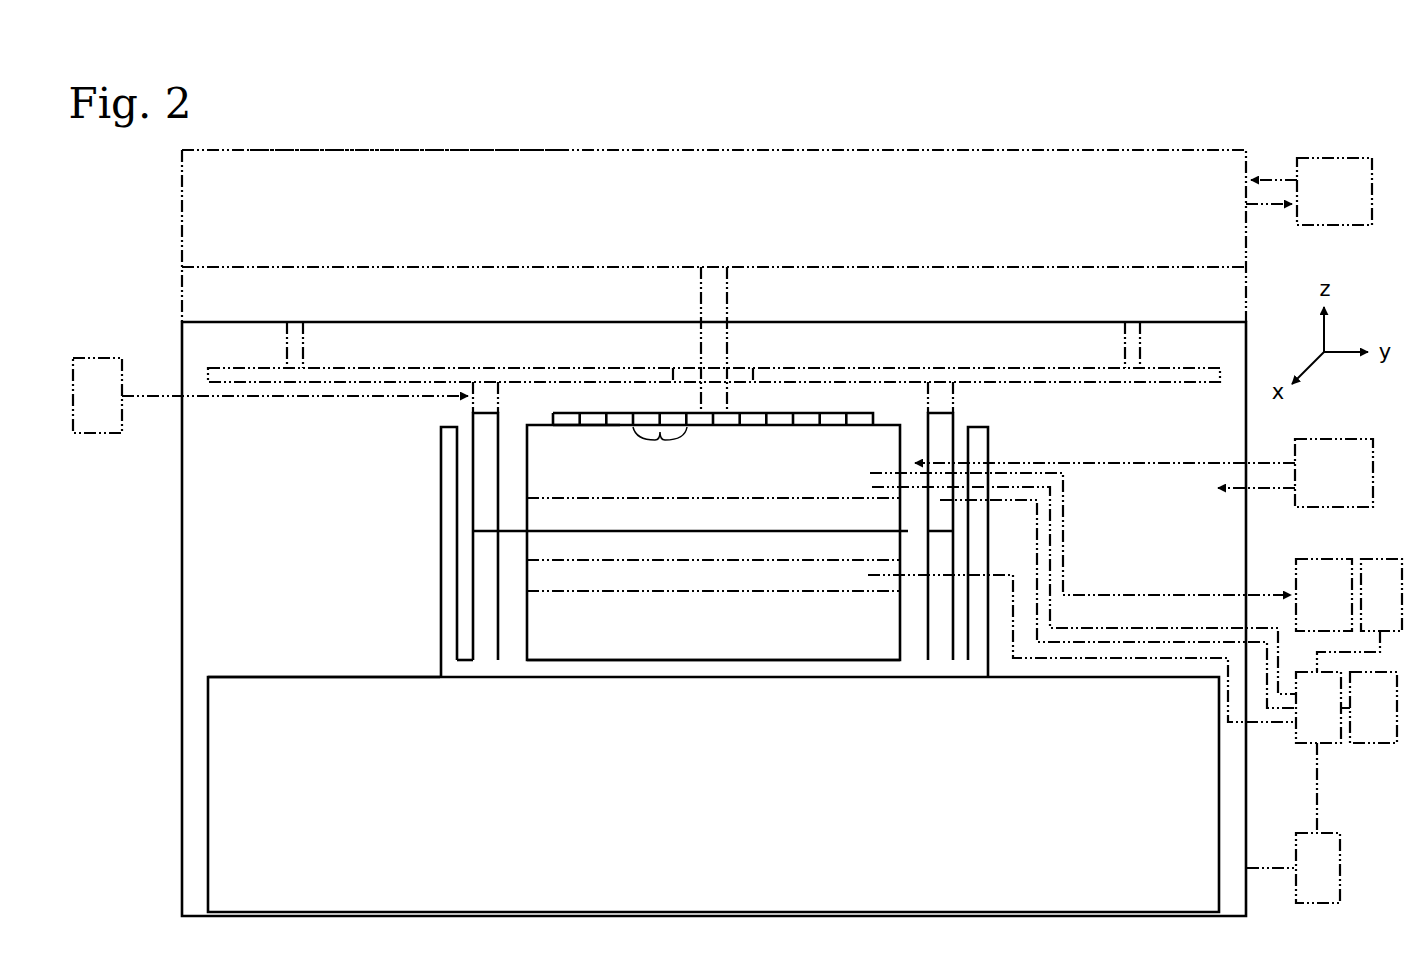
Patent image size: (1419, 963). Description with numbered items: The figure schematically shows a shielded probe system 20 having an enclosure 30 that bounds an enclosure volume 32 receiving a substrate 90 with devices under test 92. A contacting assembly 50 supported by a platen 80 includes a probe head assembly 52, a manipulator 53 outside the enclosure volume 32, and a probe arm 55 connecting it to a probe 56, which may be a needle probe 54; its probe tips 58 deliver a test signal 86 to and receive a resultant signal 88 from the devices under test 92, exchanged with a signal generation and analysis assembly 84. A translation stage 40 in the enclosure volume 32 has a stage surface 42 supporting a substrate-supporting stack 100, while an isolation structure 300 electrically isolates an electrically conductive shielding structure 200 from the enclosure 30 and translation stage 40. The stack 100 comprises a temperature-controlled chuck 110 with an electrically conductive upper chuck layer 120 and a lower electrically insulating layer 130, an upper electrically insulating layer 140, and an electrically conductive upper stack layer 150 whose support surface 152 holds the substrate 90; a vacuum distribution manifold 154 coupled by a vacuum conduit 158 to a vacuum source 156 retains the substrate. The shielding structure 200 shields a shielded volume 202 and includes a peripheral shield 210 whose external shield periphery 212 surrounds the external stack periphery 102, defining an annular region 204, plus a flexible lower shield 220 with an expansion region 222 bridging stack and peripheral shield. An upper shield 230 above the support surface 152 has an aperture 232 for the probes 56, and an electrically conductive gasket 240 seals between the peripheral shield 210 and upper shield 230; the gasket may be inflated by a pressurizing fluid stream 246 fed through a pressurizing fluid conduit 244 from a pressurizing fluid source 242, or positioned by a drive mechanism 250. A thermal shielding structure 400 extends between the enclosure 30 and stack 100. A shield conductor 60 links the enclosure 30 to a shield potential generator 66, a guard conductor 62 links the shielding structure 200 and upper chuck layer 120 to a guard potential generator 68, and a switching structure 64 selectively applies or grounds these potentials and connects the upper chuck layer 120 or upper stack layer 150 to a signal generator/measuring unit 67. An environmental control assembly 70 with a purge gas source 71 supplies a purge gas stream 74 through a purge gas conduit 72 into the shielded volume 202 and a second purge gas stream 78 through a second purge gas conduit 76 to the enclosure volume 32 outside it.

The shielded probe system 20 is at (138, 190).
The enclosure 30 is at (180, 656).
The enclosure volume 32 is at (205, 616).
The translation stage 40 is at (713, 794).
The stage surface 42 is at (283, 676).
The contacting assembly 50 is at (218, 148).
The probe head assembly 52 is at (300, 152).
The manipulator 53 is at (370, 162).
The needle probe 54 is at (445, 162).
The probe arm 55 is at (520, 162).
The probe 56 is at (703, 297).
The probe tip 58 is at (700, 413).
The shield conductor 60 is at (1285, 864).
The guard conductor 62 is at (1035, 565).
The switching structure 64 is at (1318, 752).
The shield potential generator 66 is at (1318, 868).
The signal generator/measuring unit 67 is at (1359, 615).
The guard potential generator 68 is at (1369, 707).
The environmental control assembly 70 is at (1330, 512).
The purge gas source 71 is at (1334, 473).
The purge gas conduit 72 is at (1133, 468).
The purge gas stream 74 is at (1103, 462).
The second purge gas conduit 76 is at (1262, 492).
The second purge gas stream 78 is at (1288, 492).
The platen 80 is at (180, 292).
The signal generation and analysis assembly 84 is at (1334, 191).
The test signal 86 is at (1265, 178).
The resultant signal 88 is at (1272, 206).
The substrate 90 is at (596, 432).
The device under test 92 is at (659, 450).
The substrate-supporting stack 100 is at (522, 518).
The external stack periphery 102 is at (490, 476).
The temperature-controlled chuck 110 is at (713, 637).
The electrically conductive upper chuck layer 120 is at (713, 577).
The lower electrically insulating layer 130 is at (713, 547).
The upper electrically insulating layer 140 is at (713, 516).
The electrically conductive upper stack layer 150 is at (713, 471).
The electrically conductive support surface 152 is at (888, 428).
The vacuum distribution manifold 154 is at (812, 480).
The vacuum source 156 is at (1324, 595).
The vacuum conduit 158 is at (1145, 594).
The electrically conductive shielding structure 200 is at (440, 422).
The shielded volume 202 is at (523, 395).
The annular region 204 is at (918, 447).
The electrically conductive peripheral shield 210 is at (485, 453).
The external shield periphery 212 is at (520, 498).
The flexible electrically conductive lower shield 220 is at (512, 537).
The expansion region 222 is at (917, 535).
The electrically conductive upper shield 230 is at (1180, 385).
The aperture 232 is at (680, 375).
The electrically conductive gasket 240 is at (493, 380).
The pressurizing fluid source 242 is at (97, 395).
The pressurizing fluid conduit 244 is at (232, 400).
The pressurizing fluid stream 246 is at (310, 398).
The drive mechanism 250 is at (952, 425).
The isolation structure 300 is at (470, 645).
The thermal shielding structure 400 is at (440, 608).